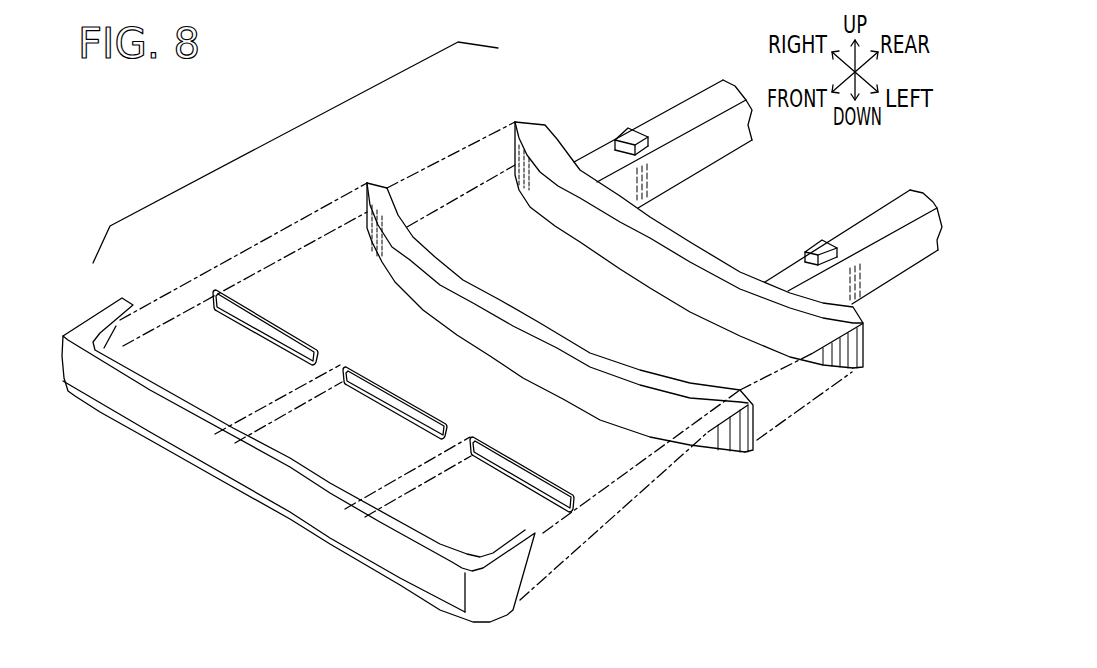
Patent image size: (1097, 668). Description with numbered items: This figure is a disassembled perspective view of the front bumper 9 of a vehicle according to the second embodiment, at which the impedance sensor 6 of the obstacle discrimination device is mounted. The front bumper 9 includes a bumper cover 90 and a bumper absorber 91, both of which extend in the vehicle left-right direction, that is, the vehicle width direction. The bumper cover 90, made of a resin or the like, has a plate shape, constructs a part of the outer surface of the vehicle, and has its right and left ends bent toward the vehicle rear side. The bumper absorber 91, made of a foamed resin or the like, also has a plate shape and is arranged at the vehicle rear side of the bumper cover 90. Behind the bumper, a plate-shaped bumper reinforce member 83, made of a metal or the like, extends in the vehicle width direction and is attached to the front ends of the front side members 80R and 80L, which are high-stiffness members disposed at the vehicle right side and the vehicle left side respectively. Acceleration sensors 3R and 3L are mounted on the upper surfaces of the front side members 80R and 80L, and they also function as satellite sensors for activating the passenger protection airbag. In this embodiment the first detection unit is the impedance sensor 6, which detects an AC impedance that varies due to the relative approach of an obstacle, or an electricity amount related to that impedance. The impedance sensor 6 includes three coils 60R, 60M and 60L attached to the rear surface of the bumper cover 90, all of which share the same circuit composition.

The bumper reinforce member 83 is at (520, 157).
The front side member 80R is at (703, 107).
The front side member 80L is at (897, 213).
The acceleration sensor 3R is at (627, 135).
The acceleration sensor 3L is at (822, 242).
The front bumper 9 is at (745, 510).
The bumper absorber 91 is at (645, 412).
The bumper cover 90 is at (503, 583).
The coil 60R is at (263, 343).
The coil 60M is at (390, 417).
The coil 60L is at (520, 493).
The impedance sensor 6 is at (403, 373).